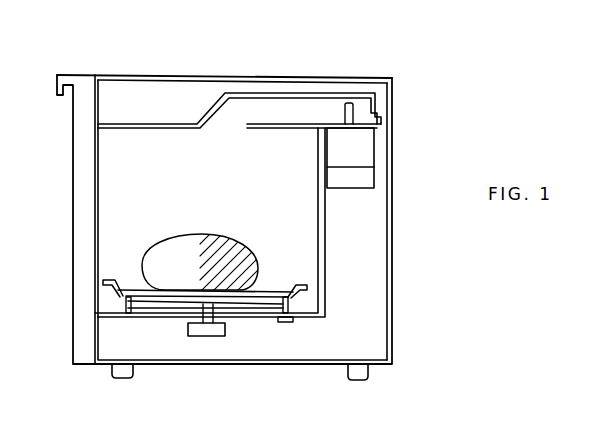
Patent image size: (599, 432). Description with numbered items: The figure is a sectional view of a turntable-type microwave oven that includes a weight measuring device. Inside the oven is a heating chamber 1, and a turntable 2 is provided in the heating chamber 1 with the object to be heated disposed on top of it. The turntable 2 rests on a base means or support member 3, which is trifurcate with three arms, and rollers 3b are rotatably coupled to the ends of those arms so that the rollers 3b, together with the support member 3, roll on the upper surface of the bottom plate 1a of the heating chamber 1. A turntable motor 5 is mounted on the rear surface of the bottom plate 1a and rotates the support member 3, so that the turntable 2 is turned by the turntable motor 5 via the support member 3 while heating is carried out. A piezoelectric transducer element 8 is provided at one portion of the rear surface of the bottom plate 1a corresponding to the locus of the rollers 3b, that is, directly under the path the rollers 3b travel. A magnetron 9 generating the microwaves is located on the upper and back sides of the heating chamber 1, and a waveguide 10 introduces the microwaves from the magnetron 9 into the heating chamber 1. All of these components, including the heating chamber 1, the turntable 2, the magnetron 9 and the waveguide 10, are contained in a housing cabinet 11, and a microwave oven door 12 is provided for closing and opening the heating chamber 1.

The heating chamber 1 is at (327, 213).
The bottom plate 1a is at (165, 318).
The turntable 2 is at (275, 290).
The support member 3 is at (262, 322).
The rollers 3b is at (122, 303).
The turntable motor 5 is at (217, 330).
The piezoelectric transducer element 8 is at (290, 325).
The magnetron 9 is at (365, 152).
The waveguide 10 is at (322, 90).
The housing cabinet 11 is at (277, 75).
The microwave oven door 12 is at (87, 192).